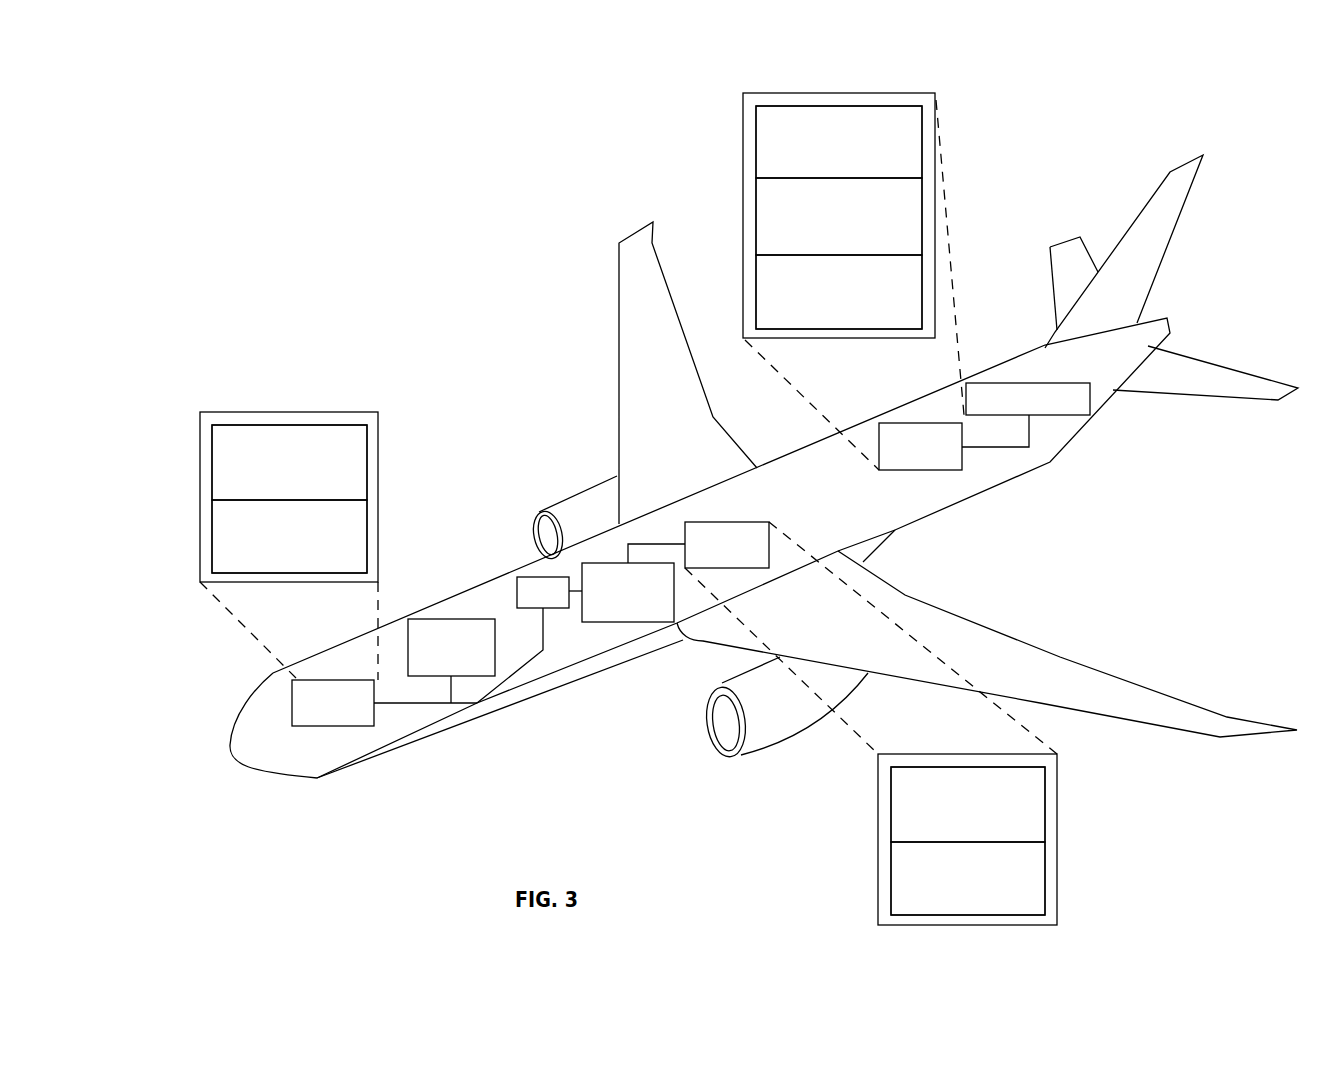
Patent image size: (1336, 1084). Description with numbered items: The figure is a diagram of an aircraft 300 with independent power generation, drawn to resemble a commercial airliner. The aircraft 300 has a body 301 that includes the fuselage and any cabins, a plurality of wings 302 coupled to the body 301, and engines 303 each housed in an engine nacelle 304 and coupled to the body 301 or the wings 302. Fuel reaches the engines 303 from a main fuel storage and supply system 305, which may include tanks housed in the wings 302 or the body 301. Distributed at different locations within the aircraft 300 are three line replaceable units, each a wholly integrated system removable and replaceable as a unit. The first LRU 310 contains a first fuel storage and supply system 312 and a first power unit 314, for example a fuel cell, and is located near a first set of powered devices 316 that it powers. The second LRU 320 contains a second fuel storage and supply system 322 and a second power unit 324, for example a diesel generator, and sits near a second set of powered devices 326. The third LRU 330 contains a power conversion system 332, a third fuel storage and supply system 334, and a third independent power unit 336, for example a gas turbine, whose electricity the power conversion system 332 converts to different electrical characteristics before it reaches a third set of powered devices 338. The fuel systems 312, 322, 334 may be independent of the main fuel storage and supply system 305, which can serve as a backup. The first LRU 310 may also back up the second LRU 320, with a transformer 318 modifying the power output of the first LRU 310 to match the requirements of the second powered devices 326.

The aircraft 300 is at (498, 122).
The body 301 is at (240, 723).
The wings 302 is at (619, 247).
The engines 303 is at (528, 514).
The engine nacelle 304 is at (587, 487).
The main fuel storage and supply system 305 is at (655, 360).
The first line replaceable unit 310 is at (252, 569).
The first fuel storage and supply system 312 is at (212, 458).
The first power unit 314 is at (212, 533).
The first set of powered devices 316 is at (452, 619).
The transformer 318 is at (518, 577).
The second line replaceable unit 320 is at (901, 723).
The second fuel storage and supply system 322 is at (1045, 803).
The second power unit 324 is at (1045, 878).
The second set of powered devices 326 is at (617, 622).
The third line replaceable unit 330 is at (816, 270).
The power conversion system 332 is at (756, 142).
The third fuel storage and supply system 334 is at (756, 218).
The third independent power unit 336 is at (756, 290).
The third set of powered devices 338 is at (1090, 397).